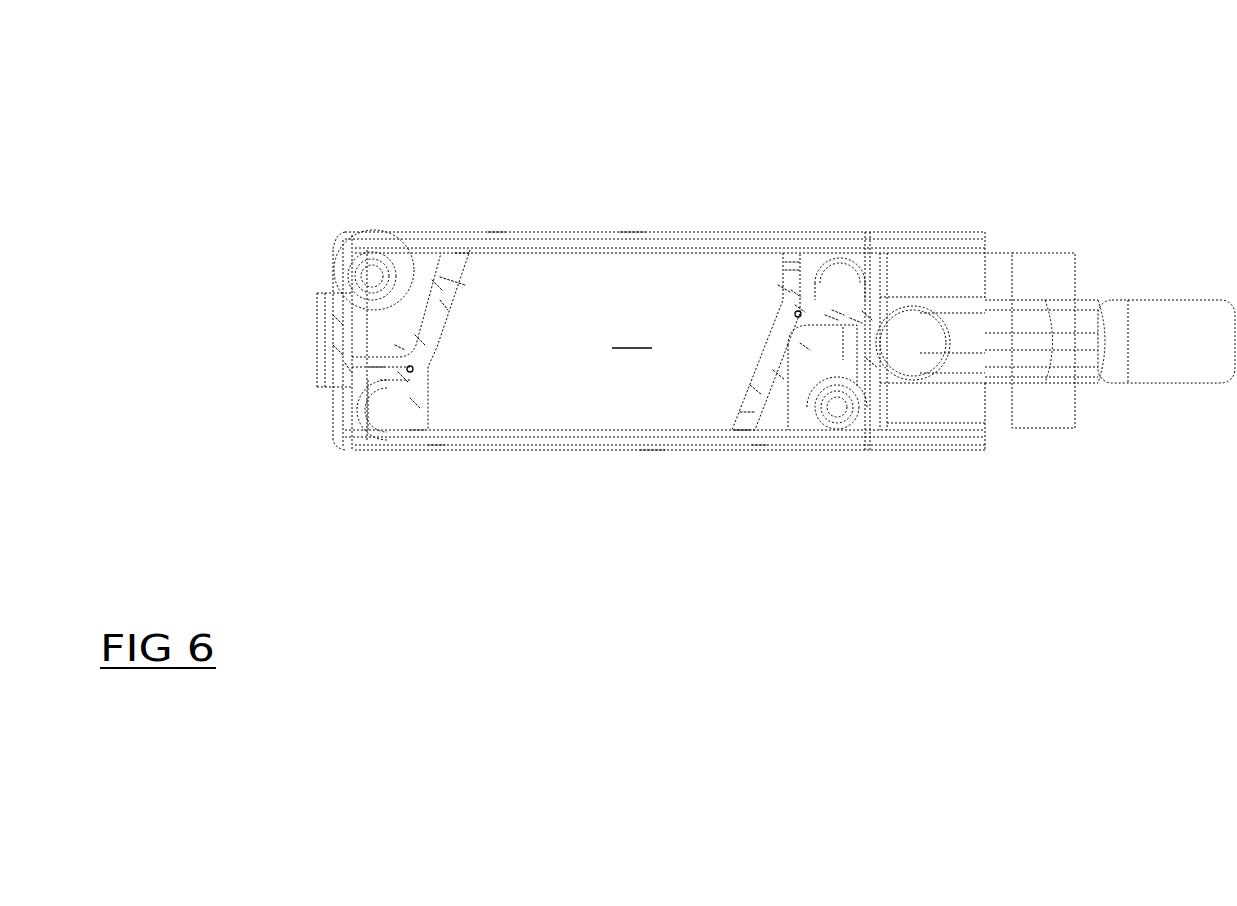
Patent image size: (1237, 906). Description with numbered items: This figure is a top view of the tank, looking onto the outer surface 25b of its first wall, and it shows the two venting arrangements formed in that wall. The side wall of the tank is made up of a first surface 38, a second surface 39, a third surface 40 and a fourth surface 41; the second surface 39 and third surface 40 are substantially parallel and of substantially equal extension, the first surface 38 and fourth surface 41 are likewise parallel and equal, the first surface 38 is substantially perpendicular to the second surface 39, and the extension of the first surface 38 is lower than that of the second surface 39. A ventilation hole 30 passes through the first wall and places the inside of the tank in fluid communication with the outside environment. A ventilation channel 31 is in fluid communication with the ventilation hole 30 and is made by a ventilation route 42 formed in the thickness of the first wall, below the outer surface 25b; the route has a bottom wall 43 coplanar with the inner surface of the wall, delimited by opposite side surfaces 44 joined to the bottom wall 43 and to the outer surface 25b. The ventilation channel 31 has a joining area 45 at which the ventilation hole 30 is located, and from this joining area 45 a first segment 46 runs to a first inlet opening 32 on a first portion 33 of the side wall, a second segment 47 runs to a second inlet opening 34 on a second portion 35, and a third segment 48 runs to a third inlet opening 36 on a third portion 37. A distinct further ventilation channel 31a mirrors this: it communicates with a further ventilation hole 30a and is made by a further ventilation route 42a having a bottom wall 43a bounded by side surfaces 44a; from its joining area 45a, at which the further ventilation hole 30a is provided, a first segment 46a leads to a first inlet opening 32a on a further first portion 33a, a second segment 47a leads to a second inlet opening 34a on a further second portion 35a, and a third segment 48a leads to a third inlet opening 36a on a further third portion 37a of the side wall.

The outer surface 25b is at (776, 340).
The ventilation hole 30 is at (418, 368).
The further ventilation hole 30a is at (795, 313).
The ventilation channel 31 is at (395, 342).
The further ventilation channel 31a is at (778, 375).
The first inlet opening 32 is at (353, 367).
The first inlet opening 32a is at (855, 317).
The first portion 33 is at (335, 352).
The further first portion 33a is at (867, 315).
The second inlet opening 34 is at (462, 252).
The second inlet opening 34a is at (795, 266).
The second portion 35 is at (495, 232).
The further second portion 35a is at (792, 256).
The third inlet opening 36 is at (418, 433).
The third inlet opening 36a is at (743, 433).
The third portion 37 is at (437, 447).
The further third portion 37a is at (760, 443).
The first surface 38 is at (333, 320).
The second surface 39 is at (632, 232).
The third surface 40 is at (652, 445).
The fourth surface 41 is at (872, 363).
The ventilation route 42 is at (419, 338).
The further ventilation route 42a is at (755, 390).
The bottom wall 43 is at (436, 283).
The bottom wall 43a is at (800, 307).
The side surfaces 44 is at (442, 282).
The side surfaces 44a is at (802, 348).
The joining area 45 is at (402, 377).
The joining area 45a is at (830, 313).
The first segment 46 is at (375, 370).
The first segment 46a is at (836, 308).
The second segment 47 is at (443, 303).
The second segment 47a is at (796, 292).
The third segment 48 is at (417, 402).
The third segment 48a is at (748, 413).